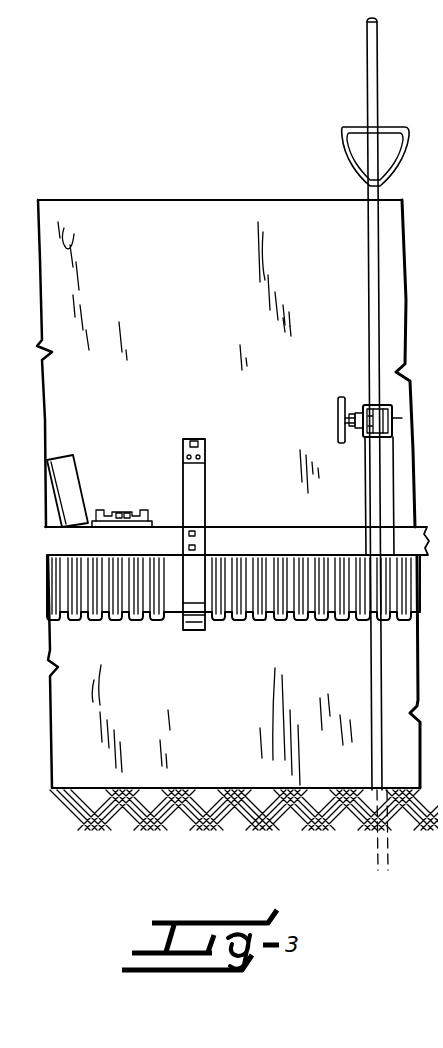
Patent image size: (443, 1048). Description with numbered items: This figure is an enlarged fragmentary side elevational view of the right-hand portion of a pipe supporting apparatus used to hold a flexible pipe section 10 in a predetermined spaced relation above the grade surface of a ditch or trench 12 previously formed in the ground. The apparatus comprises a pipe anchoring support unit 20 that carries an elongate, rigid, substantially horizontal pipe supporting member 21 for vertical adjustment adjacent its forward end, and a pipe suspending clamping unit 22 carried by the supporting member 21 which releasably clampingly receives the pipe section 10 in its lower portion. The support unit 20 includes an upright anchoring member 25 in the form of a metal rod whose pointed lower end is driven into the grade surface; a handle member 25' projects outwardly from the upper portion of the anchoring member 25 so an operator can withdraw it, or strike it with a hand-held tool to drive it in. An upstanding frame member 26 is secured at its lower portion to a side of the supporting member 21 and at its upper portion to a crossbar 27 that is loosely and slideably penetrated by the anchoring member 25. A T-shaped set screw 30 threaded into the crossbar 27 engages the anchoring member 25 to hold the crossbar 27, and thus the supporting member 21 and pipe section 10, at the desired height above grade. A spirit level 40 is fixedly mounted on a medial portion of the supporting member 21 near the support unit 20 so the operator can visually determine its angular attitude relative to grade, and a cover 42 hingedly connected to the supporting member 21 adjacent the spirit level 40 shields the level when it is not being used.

The flexible pipe section 10 is at (117, 626).
The ditch or trench 12 is at (214, 212).
The pipe anchoring support unit 20 is at (360, 405).
The pipe supporting member 21 is at (248, 540).
The pipe suspending clamping unit 22 is at (207, 476).
The anchoring member 25 is at (347, 444).
The handle member 25' is at (356, 147).
The upstanding frame member 26 is at (365, 485).
The crossbar 27 is at (393, 412).
The set screw 30 is at (337, 404).
The spirit level 40 is at (125, 516).
The cover 42 is at (70, 465).